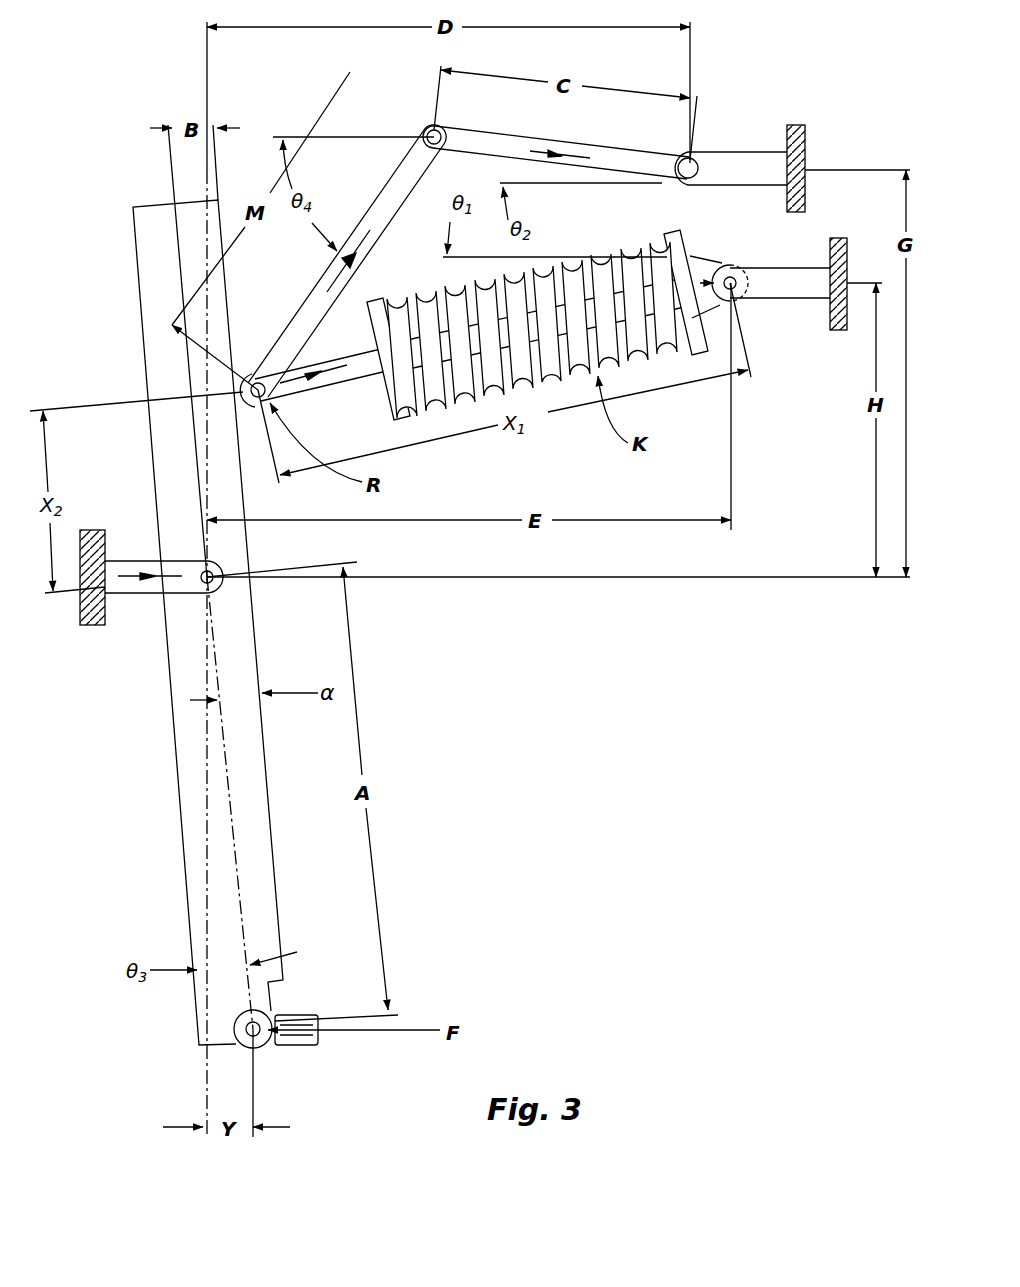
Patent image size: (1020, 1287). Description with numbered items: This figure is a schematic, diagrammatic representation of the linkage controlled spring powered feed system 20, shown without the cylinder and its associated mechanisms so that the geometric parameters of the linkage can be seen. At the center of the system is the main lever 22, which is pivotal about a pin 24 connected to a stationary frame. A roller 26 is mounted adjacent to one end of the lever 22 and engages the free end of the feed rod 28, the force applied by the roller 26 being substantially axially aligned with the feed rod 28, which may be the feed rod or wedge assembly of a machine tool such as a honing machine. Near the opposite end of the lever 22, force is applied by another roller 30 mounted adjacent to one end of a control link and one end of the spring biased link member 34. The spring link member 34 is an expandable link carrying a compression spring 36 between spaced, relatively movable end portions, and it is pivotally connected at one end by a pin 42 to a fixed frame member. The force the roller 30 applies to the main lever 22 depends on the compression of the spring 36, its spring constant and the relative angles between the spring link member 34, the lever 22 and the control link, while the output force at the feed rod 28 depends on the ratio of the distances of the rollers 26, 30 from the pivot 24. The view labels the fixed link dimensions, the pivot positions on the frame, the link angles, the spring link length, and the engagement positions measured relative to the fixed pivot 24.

The linkage controlled spring powered feed system 20 is at (593, 630).
The main lever 22 is at (262, 782).
The pin 24 is at (197, 592).
The roller 26 is at (262, 1046).
The feed rod 28 is at (312, 1018).
The roller 30 is at (253, 408).
The spring biased link member 34 is at (470, 400).
The compression spring 36 is at (560, 378).
The pin 42 is at (736, 287).